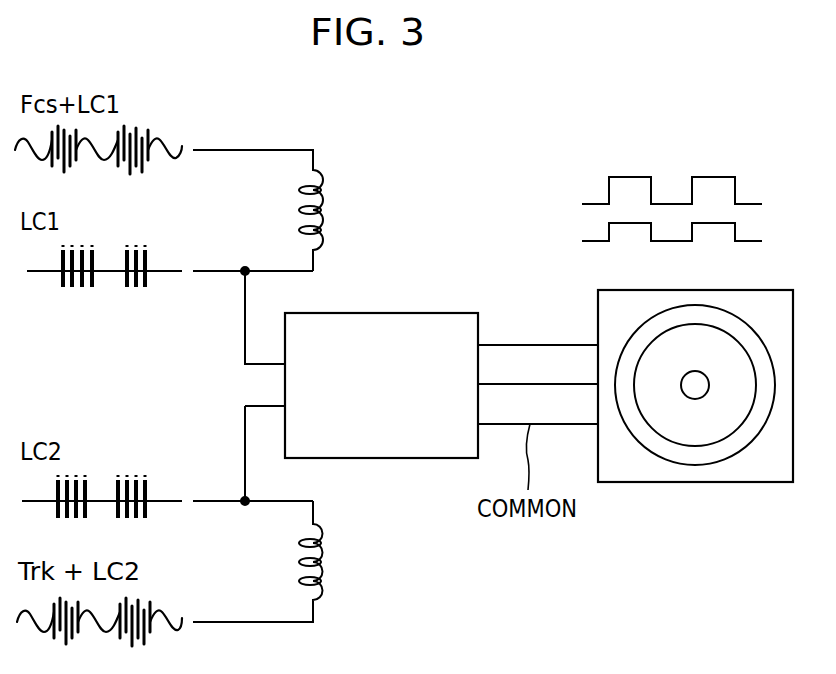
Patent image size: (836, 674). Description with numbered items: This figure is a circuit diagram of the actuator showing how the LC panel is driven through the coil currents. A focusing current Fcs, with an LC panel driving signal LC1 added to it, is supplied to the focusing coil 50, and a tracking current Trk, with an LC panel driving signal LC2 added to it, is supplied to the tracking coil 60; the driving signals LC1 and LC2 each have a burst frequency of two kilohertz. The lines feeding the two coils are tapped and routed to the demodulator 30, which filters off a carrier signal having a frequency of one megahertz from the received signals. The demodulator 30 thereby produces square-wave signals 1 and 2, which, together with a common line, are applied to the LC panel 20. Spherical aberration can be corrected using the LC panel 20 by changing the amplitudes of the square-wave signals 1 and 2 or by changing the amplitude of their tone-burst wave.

The LC panel 20 is at (698, 406).
The demodulator 30 is at (381, 385).
The focusing coil 50 is at (310, 192).
The tracking coil 60 is at (311, 582).
The square-wave signal 1 is at (513, 346).
The square-wave signal 2 is at (530, 384).